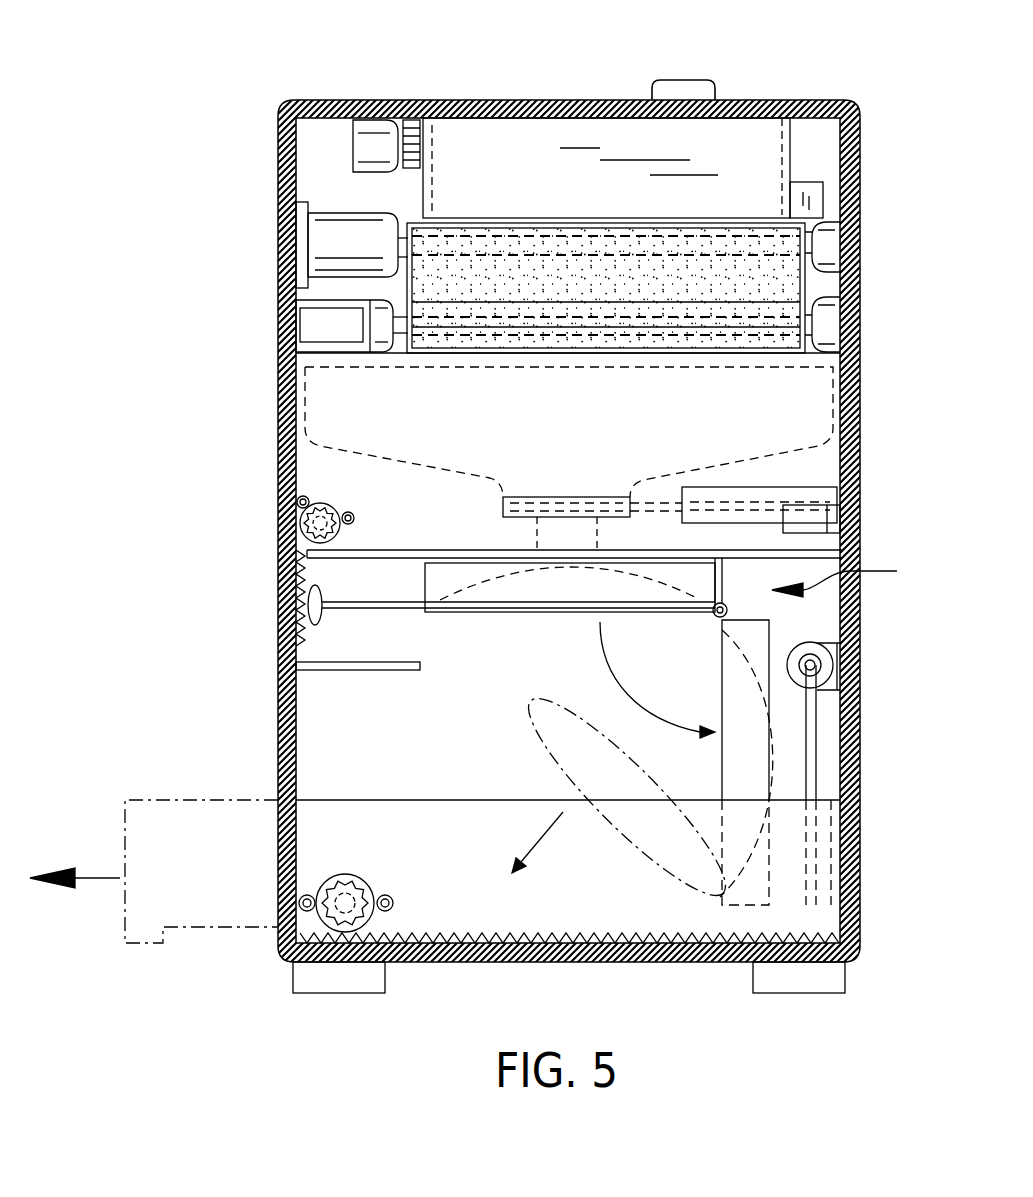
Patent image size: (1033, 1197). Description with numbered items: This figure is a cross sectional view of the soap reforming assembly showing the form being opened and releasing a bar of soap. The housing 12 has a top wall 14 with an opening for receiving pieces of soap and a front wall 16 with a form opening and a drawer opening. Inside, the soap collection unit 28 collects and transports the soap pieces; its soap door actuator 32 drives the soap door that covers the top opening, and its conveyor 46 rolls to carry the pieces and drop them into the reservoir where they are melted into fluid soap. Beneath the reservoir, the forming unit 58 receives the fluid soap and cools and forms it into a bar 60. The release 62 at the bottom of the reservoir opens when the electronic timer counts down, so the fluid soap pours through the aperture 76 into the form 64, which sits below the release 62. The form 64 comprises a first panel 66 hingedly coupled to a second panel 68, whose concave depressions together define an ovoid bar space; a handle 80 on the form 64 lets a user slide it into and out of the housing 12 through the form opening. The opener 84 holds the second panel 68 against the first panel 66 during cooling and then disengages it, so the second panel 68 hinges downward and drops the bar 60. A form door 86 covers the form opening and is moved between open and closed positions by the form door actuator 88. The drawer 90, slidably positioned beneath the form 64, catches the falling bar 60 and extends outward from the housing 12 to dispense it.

The housing 12 is at (280, 104).
The top wall 14 is at (514, 100).
The front wall 16 is at (278, 344).
The soap collection unit 28 is at (318, 161).
The soap door actuator 32 is at (372, 135).
The conveyor 46 is at (805, 288).
The forming unit 58 is at (729, 712).
The bar 60 is at (648, 882).
The release 62 is at (750, 488).
The form 64 is at (423, 583).
The first panel 66 is at (717, 580).
The second panel 68 is at (765, 703).
The aperture 76 is at (550, 551).
The handle 80 is at (360, 612).
The opener 84 is at (818, 645).
The form door 86 is at (298, 606).
The form door actuator 88 is at (298, 520).
The drawer 90 is at (332, 800).